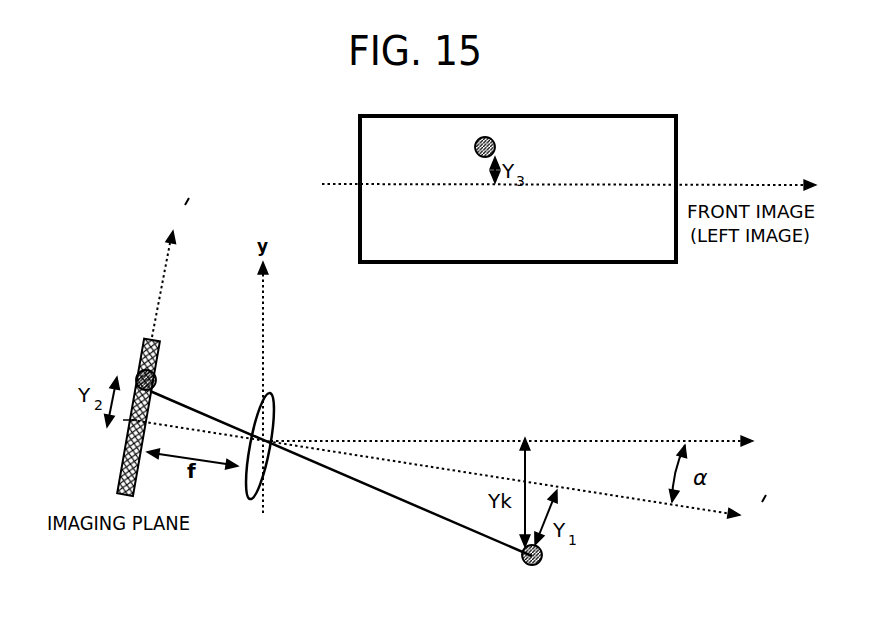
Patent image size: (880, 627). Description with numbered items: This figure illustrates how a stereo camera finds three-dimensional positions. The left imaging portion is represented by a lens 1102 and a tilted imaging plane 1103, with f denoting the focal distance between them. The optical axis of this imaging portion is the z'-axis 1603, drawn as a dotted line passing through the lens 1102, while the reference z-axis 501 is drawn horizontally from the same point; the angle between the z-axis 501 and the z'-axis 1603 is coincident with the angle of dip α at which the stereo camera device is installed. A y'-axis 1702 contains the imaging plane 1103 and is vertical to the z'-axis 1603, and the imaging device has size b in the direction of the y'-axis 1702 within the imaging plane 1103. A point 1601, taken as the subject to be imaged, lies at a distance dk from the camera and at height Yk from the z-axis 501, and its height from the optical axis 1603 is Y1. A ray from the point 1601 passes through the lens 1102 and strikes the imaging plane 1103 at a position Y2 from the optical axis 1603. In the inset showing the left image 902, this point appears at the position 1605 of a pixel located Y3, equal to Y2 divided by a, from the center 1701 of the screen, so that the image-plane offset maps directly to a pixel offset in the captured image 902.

The left image 902 is at (677, 128).
The position of a pixel 1605 is at (473, 148).
The center of the screen 1701 is at (405, 186).
The y'-axis 1702 is at (164, 272).
The imaging plane 1103 is at (121, 471).
The lens 1102 is at (250, 500).
The z-axis 501 is at (707, 440).
The point 1601 is at (520, 562).
The z'-axis 1603 is at (695, 507).